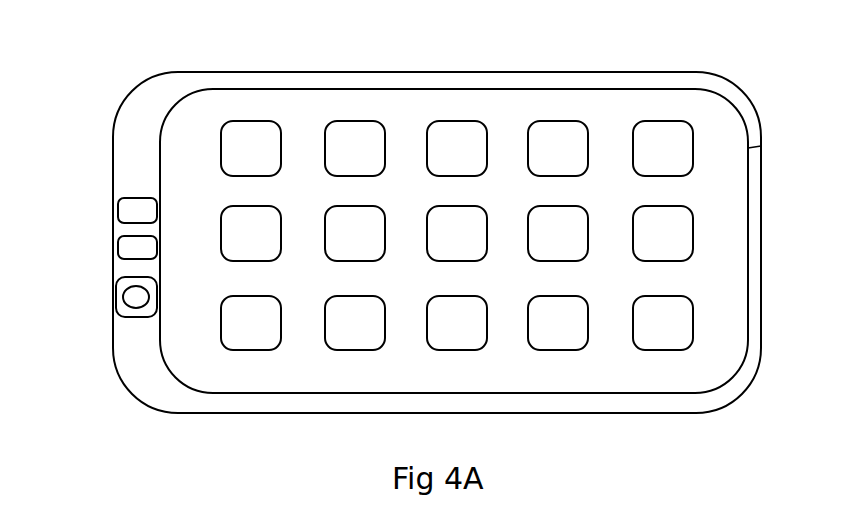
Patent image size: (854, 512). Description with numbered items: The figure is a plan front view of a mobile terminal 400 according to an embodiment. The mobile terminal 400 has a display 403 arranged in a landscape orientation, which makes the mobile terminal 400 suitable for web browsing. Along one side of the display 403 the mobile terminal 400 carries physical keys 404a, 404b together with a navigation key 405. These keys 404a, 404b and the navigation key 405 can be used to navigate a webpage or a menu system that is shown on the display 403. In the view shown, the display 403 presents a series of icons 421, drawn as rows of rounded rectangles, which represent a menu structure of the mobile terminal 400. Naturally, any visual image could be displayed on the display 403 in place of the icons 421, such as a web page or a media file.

The mobile terminal 400 is at (738, 90).
The display 403 is at (760, 147).
The physical key 404a is at (118, 203).
The physical key 404b is at (118, 245).
The navigation key 405 is at (116, 297).
The icons 421 is at (450, 120).